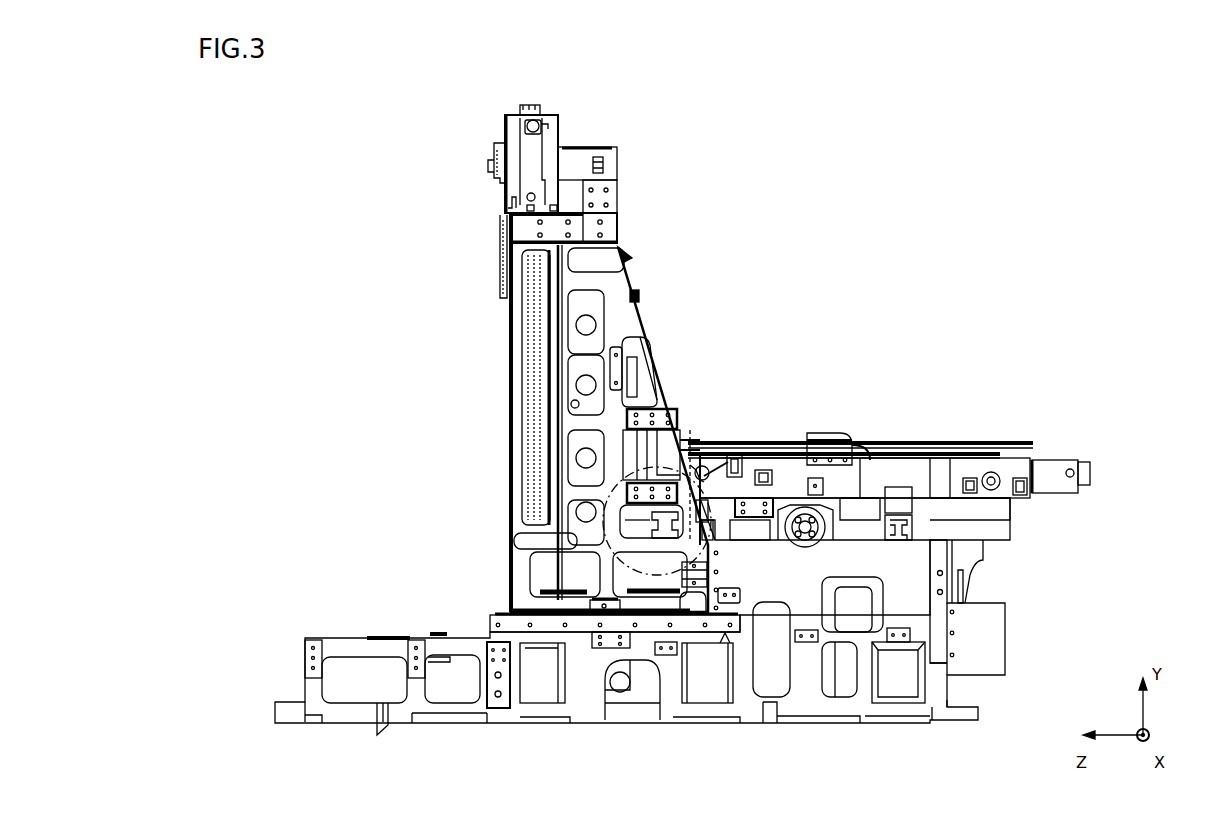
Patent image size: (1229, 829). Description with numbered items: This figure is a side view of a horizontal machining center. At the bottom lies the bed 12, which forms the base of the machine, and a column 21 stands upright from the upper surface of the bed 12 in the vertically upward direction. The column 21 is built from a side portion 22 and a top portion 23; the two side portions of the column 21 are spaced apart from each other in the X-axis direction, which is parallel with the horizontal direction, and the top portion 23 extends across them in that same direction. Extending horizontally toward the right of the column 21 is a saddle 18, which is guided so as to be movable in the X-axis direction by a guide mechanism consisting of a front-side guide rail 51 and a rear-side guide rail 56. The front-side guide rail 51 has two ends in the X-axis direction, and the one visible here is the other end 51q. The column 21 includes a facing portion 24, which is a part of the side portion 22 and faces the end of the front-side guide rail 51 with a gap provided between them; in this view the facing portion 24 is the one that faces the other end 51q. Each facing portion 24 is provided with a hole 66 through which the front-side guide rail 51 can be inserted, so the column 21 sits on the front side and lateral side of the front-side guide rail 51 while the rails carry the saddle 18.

The bed 12 is at (748, 707).
The saddle 18 is at (1003, 475).
The column 21 is at (490, 153).
The side portion 22 is at (548, 290).
The top portion 23 is at (571, 158).
The facing portion 24 is at (637, 547).
The front-side guide rail 51 is at (650, 525).
The other end 51q is at (665, 538).
The rear-side guide rail 56 is at (915, 527).
The hole 66 is at (697, 522).